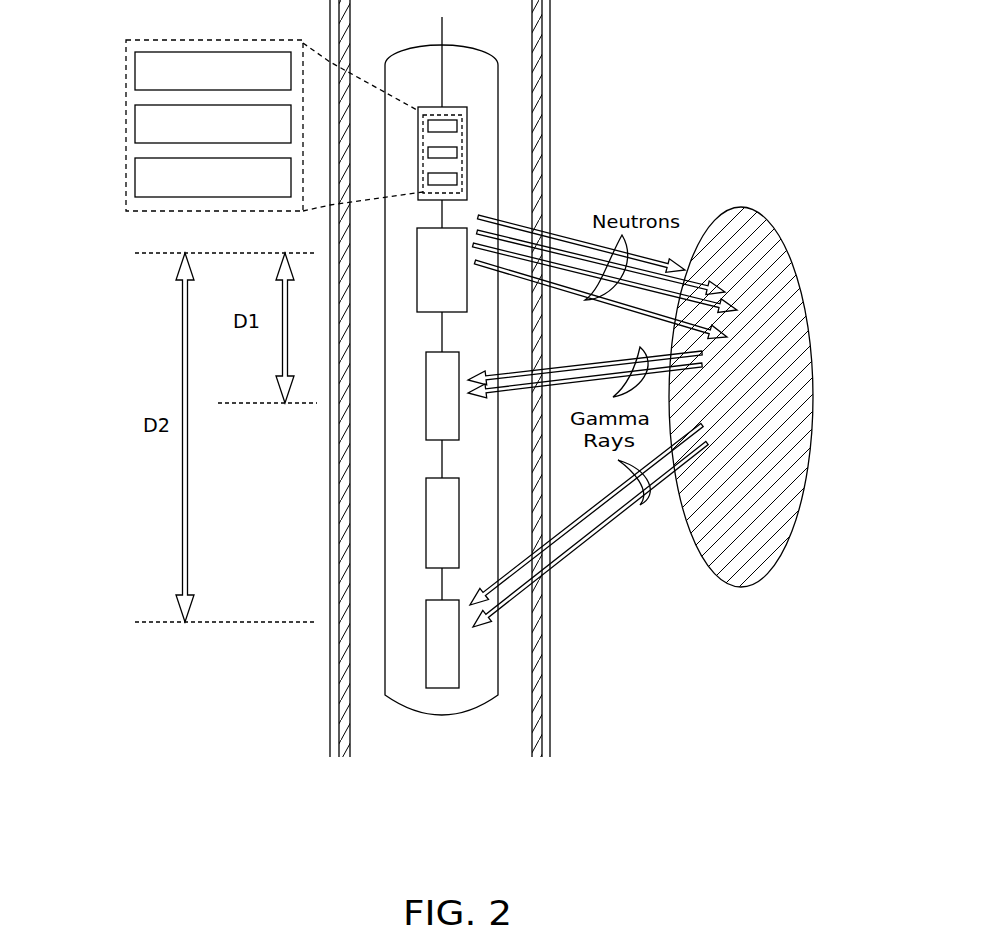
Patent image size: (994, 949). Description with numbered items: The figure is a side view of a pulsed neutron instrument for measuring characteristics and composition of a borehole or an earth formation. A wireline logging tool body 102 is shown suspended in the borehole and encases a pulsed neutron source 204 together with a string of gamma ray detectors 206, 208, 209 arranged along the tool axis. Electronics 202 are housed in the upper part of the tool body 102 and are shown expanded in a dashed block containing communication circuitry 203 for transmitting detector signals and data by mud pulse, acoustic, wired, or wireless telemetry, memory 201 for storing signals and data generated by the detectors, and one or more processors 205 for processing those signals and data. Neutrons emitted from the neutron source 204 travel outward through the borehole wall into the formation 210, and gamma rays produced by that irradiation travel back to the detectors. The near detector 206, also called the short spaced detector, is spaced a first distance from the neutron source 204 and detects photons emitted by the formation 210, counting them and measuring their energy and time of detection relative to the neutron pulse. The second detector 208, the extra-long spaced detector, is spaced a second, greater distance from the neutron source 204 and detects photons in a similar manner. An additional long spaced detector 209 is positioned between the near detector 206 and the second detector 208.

The wireline logging tool body 102 is at (402, 52).
The electronics 202 is at (468, 110).
The communication circuitry 203 is at (135, 70).
The memory 201 is at (135, 123).
The processor 205 is at (135, 178).
The pulsed neutron source 204 is at (467, 298).
The near detector 206 is at (425, 372).
The additional detector 209 is at (425, 495).
The second detector 208 is at (425, 618).
The formation 210 is at (762, 217).